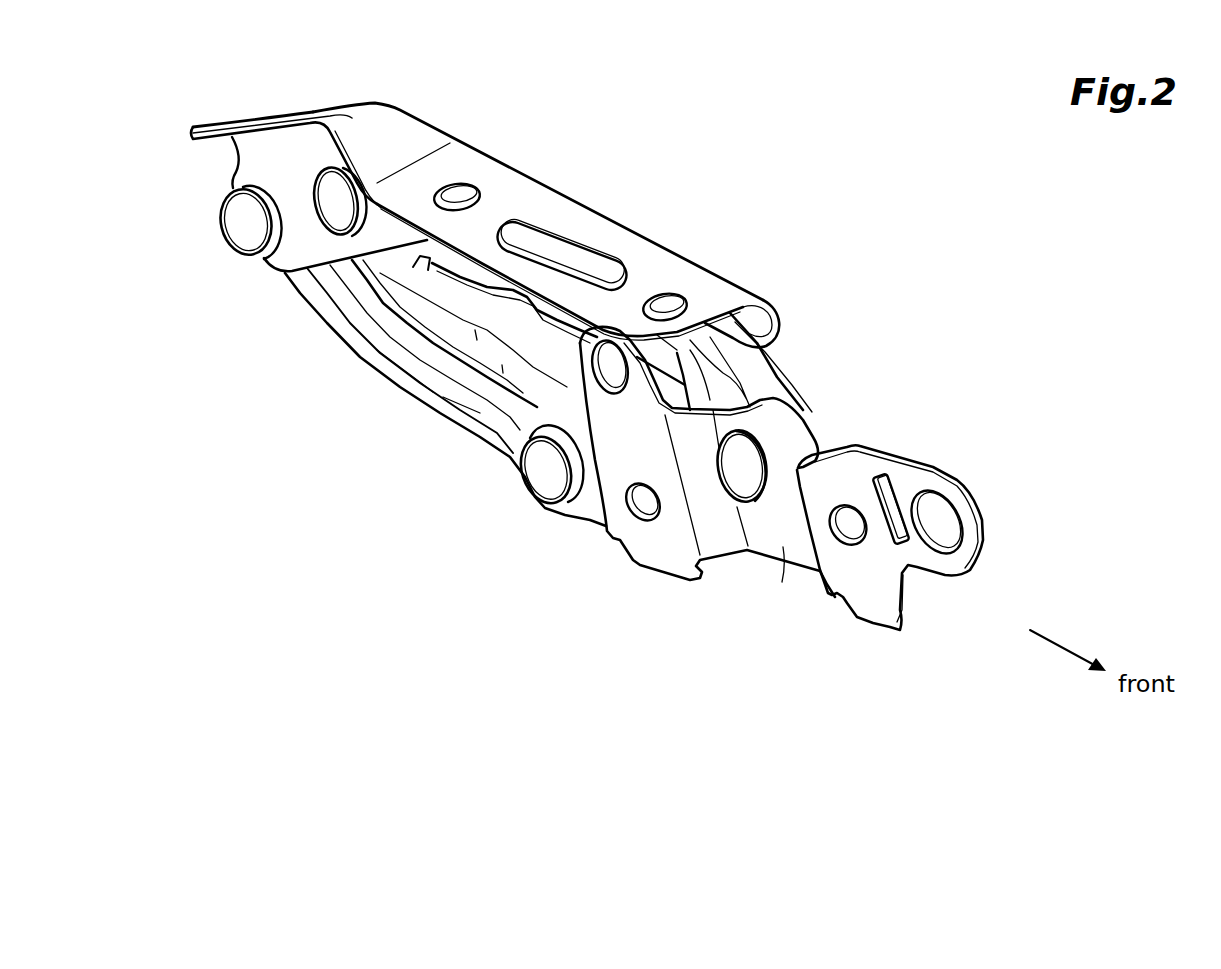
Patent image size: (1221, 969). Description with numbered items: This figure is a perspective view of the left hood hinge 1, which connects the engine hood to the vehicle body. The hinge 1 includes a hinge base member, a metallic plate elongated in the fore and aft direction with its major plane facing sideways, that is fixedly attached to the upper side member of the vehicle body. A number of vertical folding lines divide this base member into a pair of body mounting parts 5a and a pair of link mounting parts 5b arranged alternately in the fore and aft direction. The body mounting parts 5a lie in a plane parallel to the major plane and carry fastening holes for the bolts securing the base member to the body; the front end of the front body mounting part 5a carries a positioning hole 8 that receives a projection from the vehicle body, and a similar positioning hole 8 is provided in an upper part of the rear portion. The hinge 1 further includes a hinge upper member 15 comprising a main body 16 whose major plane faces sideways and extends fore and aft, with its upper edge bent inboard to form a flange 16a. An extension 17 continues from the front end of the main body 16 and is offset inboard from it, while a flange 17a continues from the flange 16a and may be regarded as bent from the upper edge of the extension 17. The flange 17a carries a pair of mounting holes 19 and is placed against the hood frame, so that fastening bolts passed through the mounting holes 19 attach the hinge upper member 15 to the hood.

The hood hinge 1 is at (760, 148).
The body mounting part 5a is at (687, 540).
The link mounting part 5b is at (565, 512).
The positioning hole 8 is at (625, 378).
The hinge upper member 15 is at (526, 164).
The main body 16 is at (250, 168).
The flange 16a is at (285, 114).
The extension 17 is at (760, 323).
The flange 17a is at (583, 221).
The mounting hole 19 is at (460, 198).